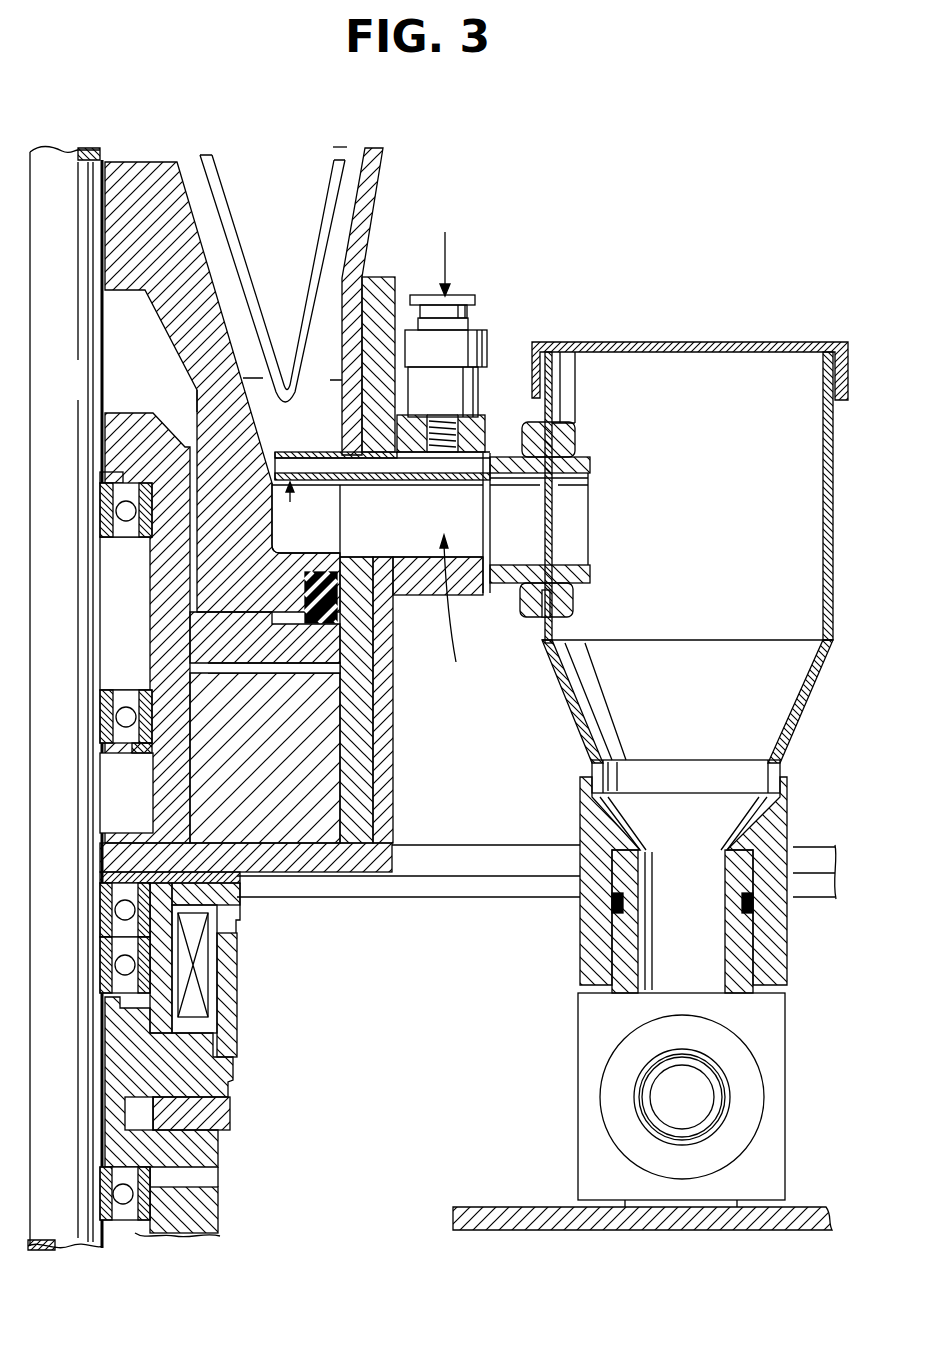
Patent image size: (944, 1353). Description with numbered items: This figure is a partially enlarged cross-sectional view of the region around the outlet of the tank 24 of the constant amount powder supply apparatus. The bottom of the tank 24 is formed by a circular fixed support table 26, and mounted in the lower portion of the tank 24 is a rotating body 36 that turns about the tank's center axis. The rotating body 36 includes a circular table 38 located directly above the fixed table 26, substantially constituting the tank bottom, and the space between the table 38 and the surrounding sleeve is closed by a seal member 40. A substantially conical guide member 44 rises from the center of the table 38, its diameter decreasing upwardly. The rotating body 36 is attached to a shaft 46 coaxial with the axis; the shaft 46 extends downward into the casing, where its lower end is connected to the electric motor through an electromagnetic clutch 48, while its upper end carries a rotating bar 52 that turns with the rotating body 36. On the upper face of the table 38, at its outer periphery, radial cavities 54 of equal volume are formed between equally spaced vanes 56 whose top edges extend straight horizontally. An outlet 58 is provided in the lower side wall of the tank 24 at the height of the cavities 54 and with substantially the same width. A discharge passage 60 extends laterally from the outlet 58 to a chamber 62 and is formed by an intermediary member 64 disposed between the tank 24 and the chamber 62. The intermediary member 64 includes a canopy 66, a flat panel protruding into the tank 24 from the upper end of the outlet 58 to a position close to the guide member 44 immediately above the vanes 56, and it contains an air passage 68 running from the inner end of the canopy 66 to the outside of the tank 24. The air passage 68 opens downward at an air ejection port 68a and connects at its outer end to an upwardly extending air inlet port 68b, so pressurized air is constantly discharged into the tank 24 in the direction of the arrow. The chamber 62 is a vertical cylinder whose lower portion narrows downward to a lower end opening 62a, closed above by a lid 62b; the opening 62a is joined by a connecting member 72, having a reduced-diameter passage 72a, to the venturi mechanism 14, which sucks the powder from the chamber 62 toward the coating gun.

The venturi mechanism 14 is at (608, 1100).
The tank 24 is at (383, 166).
The circular fixed support table 26 is at (293, 760).
The rotating body 36 is at (152, 142).
The circular table 38 is at (218, 633).
The seal member 40 is at (370, 590).
The guide member 44 is at (190, 287).
The shaft 46 is at (85, 372).
The electromagnetic clutch 48 is at (231, 1079).
The rotating bar 52 is at (232, 220).
The cavities 54 is at (275, 620).
The vanes 56 is at (300, 520).
The outlet 58 is at (337, 605).
The discharge passage 60 is at (465, 575).
The chamber 62 is at (830, 518).
The lower end opening 62a is at (707, 787).
The lid 62b is at (698, 345).
The intermediary member 64 is at (490, 584).
The canopy 66 is at (313, 453).
The air passage 68 is at (445, 452).
The air ejection port 68a is at (372, 583).
The air inlet port 68b is at (480, 443).
The connecting member 72 is at (590, 926).
The passage 72a is at (640, 943).